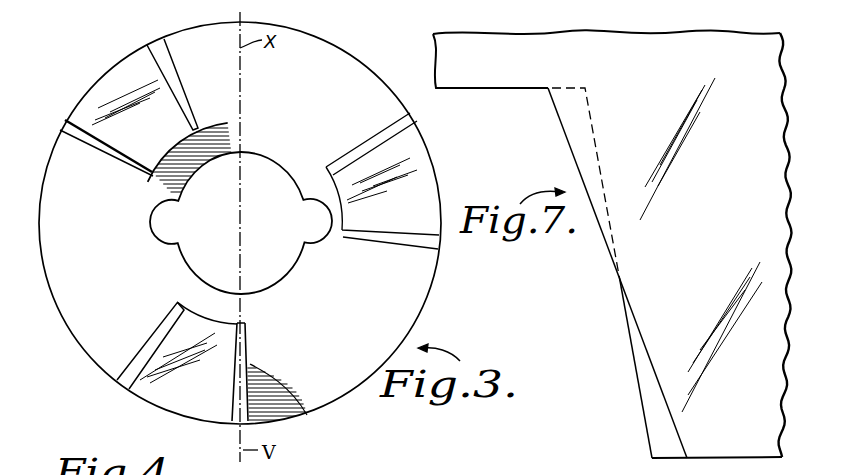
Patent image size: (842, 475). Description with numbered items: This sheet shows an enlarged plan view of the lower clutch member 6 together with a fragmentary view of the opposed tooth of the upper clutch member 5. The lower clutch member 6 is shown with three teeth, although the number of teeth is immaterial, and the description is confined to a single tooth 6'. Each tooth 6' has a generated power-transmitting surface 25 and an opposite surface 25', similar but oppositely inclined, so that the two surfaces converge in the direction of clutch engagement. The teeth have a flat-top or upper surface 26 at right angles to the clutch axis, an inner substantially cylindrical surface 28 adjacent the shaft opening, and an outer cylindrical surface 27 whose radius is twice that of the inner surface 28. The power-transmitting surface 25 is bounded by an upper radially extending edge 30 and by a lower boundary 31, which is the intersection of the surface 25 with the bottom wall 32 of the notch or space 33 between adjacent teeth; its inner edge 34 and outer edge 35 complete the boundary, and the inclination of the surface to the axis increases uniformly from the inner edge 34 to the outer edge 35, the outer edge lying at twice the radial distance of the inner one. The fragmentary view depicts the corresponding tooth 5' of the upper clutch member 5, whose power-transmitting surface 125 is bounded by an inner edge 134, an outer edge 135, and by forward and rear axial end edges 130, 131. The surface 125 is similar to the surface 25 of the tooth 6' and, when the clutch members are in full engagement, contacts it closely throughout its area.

In FIG. 7, the upper clutch member 5 is at (612, 244).
In FIG. 7, the tooth of the upper clutch member 5' is at (701, 245).
In FIG. 3, the lower clutch member 6 is at (240, 237).
In FIG. 3, the tooth of the lower clutch member 6' is at (280, 272).
In FIG. 3, the power-transmitting surface 25 is at (162, 246).
In FIG. 3, the opposite surface 25' is at (154, 214).
In FIG. 3, the flat-top or upper surface 26 is at (147, 51).
In FIG. 3, the outer curved or cylindrical surface 27 is at (110, 68).
In FIG. 3, the inner curved substantially cylindrical surface 28 is at (214, 138).
In FIG. 3, the upper radially extending edge 30 is at (117, 150).
In FIG. 3, the lower boundary 31 is at (78, 136).
In FIG. 3, the bottom wall 32 is at (75, 308).
In FIG. 3, the notch or space 33 is at (403, 258).
In FIG. 3, the inner edge 34 is at (155, 180).
In FIG. 3, the outer edge 35 is at (68, 121).
In FIG. 7, the power-transmitting surface 125 is at (572, 156).
In FIG. 7, the forward axial end edge 130 is at (665, 459).
In FIG. 7, the rear axial end edge 131 is at (565, 86).
In FIG. 7, the inner edge 134 is at (633, 351).
In FIG. 7, the outer edge 135 is at (559, 121).